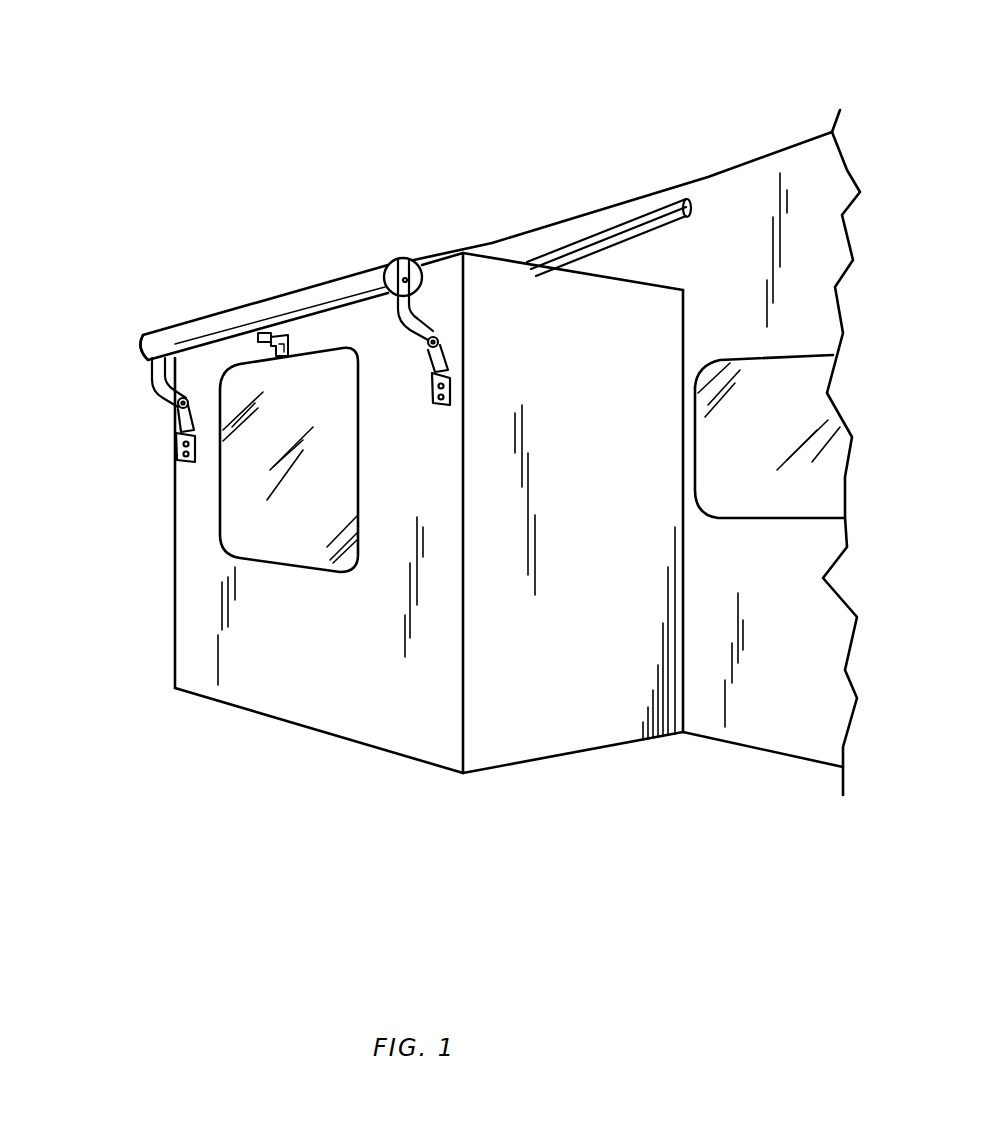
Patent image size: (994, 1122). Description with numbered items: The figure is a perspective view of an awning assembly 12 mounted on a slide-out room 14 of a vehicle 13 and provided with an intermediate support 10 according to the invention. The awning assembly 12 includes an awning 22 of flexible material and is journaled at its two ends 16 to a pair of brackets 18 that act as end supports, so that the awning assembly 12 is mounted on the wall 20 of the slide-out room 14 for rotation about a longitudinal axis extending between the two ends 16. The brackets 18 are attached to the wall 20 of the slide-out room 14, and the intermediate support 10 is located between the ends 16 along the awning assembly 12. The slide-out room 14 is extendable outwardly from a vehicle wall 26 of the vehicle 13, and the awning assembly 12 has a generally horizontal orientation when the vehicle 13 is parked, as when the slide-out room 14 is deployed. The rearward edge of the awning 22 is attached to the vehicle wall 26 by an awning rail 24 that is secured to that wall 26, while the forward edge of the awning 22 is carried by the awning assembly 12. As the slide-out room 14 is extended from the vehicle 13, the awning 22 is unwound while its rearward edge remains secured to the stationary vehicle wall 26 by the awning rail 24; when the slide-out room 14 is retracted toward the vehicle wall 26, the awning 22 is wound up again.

The intermediate support 10 is at (292, 327).
The awning assembly 12 is at (186, 320).
The vehicle 13 is at (748, 160).
The slide-out room 14 is at (513, 765).
The ends 16 is at (413, 273).
The brackets 18 is at (408, 309).
The wall 20 is at (390, 717).
The awning 22 is at (492, 243).
The awning rail 24 is at (662, 206).
The vehicle wall 26 is at (818, 165).